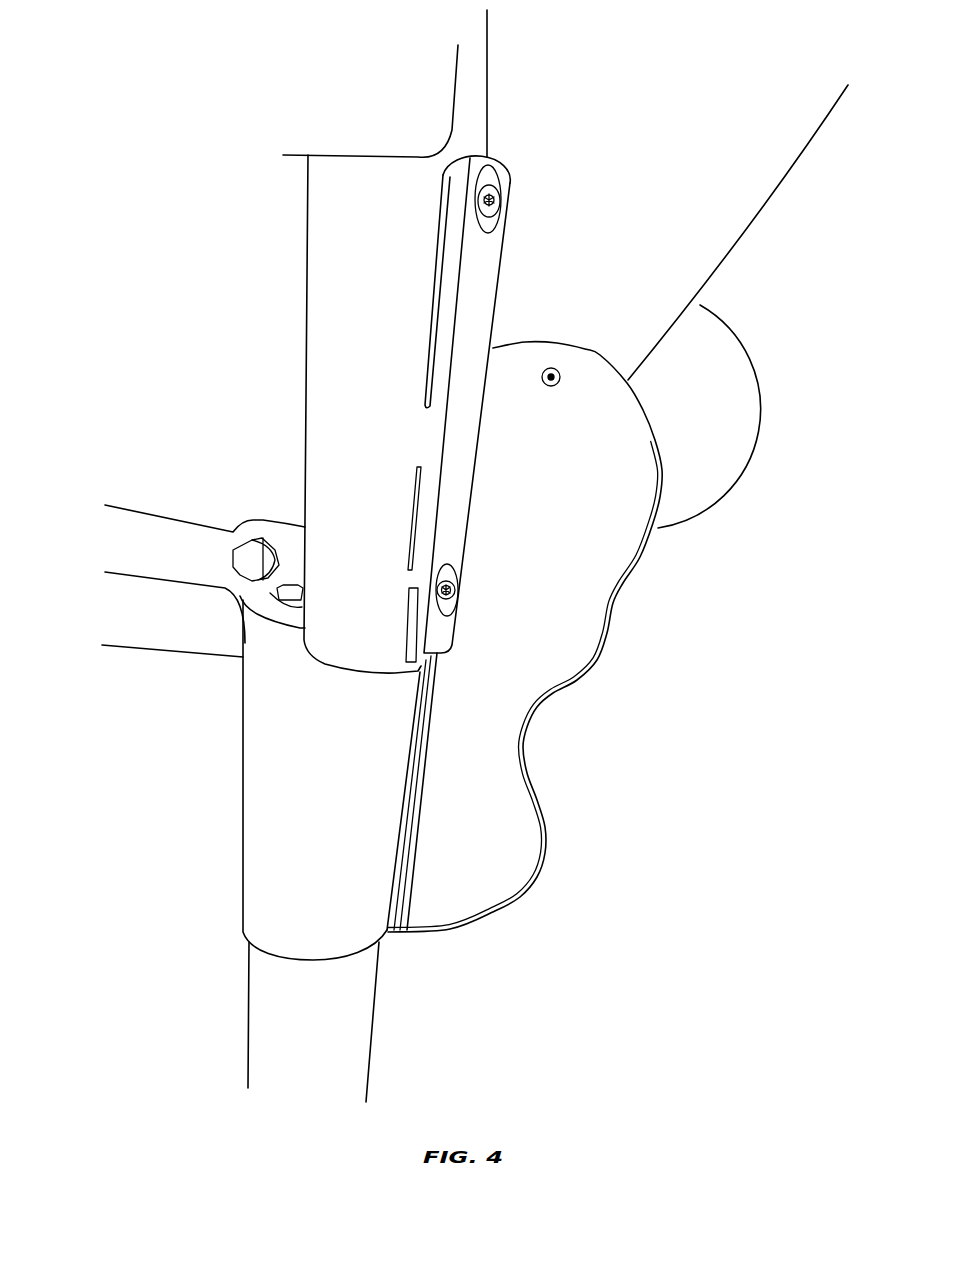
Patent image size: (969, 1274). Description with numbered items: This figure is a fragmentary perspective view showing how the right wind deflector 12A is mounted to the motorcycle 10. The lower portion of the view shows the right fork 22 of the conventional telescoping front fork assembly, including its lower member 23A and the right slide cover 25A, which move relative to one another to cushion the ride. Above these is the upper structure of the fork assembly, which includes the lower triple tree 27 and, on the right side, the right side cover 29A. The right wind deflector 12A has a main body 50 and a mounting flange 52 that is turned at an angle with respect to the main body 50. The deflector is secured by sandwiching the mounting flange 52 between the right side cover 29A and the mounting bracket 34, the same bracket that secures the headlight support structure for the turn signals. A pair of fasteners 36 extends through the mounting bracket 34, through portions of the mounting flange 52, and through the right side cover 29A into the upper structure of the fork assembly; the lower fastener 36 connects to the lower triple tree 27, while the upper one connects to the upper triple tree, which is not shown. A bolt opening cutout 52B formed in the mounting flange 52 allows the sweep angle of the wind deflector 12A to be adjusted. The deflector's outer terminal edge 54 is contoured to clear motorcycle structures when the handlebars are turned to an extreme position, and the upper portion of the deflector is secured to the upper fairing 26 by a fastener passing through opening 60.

The motorcycle 10 is at (244, 62).
The right wind deflector 12A is at (636, 797).
The right fork 22 is at (140, 922).
The lower member 23A is at (268, 1032).
The right slide cover 25A is at (278, 803).
The upper fairing 26 is at (745, 182).
The lower triple tree 27 is at (165, 540).
The right side cover 29A is at (330, 403).
The mounting bracket 34 is at (485, 273).
The fasteners 36 is at (498, 197).
The main body 50 is at (573, 630).
The mounting flange 52 is at (432, 263).
The bolt opening cutout 52B is at (410, 573).
The outer terminal edge 54 is at (533, 718).
The opening 60 is at (560, 377).